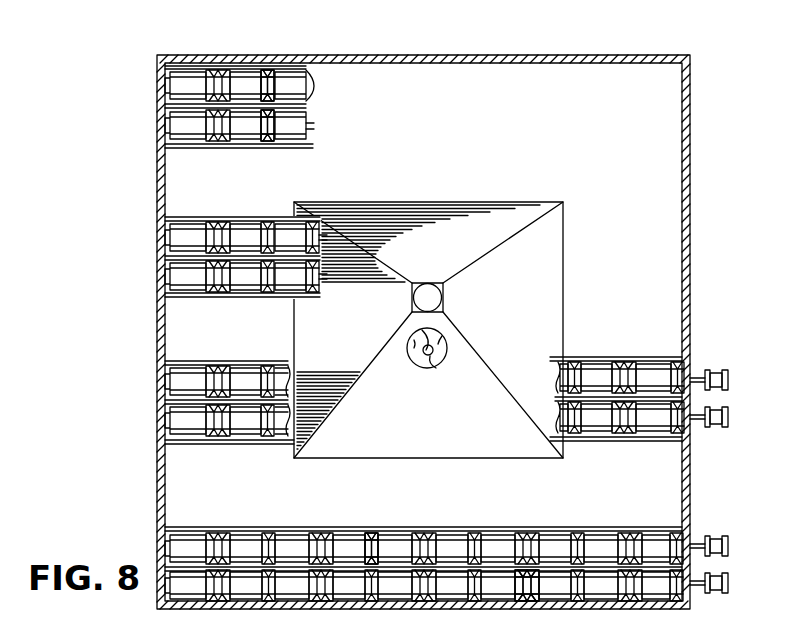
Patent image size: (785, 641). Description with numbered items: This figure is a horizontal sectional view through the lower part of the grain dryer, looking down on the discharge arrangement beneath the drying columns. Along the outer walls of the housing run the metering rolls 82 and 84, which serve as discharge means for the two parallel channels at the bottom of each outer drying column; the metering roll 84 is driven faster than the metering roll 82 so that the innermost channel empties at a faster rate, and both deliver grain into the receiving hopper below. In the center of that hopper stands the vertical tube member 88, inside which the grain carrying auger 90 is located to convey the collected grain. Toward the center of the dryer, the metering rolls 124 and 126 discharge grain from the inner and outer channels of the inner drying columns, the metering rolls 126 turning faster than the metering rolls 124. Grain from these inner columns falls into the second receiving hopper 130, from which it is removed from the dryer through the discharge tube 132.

The metering roll 82 is at (267, 88).
The metering roll 84 is at (267, 117).
The tube member 88 is at (448, 354).
The grain carrying auger 90 is at (427, 368).
The metering roll 124 is at (258, 361).
The metering roll 126 is at (262, 219).
The second receiving hopper 130 is at (541, 297).
The discharge tube 132 is at (423, 291).